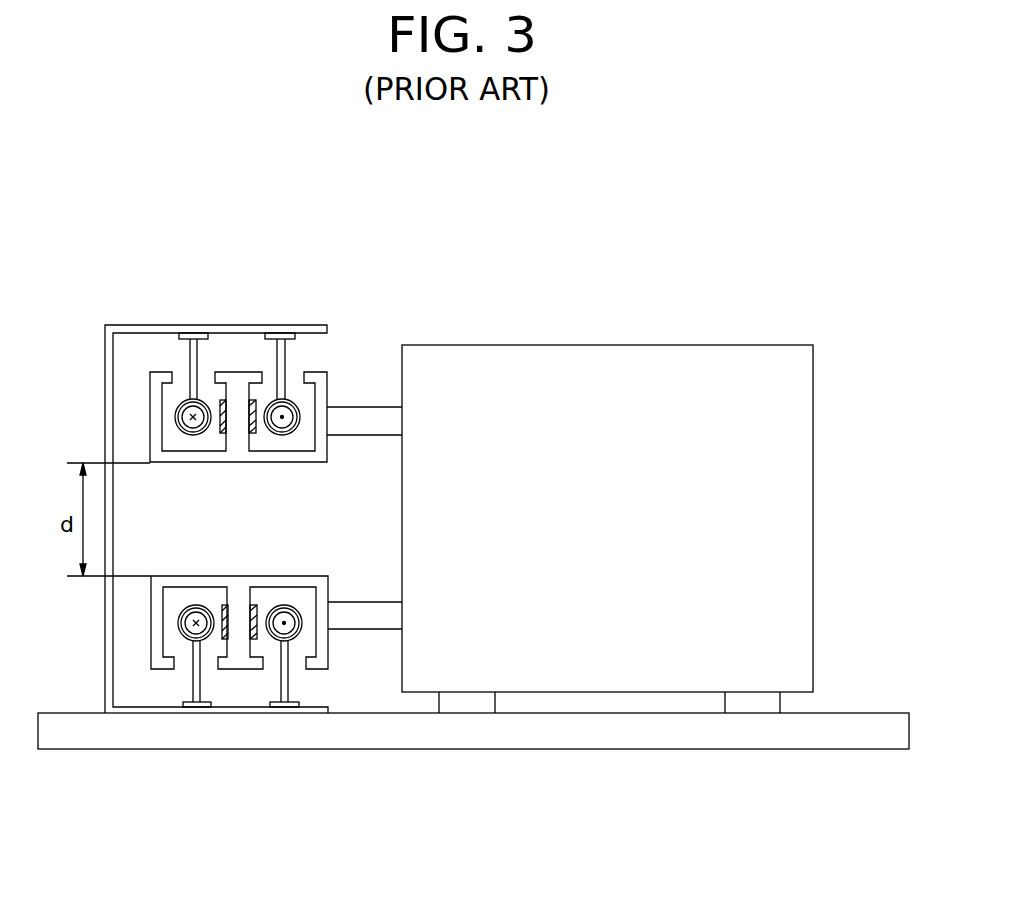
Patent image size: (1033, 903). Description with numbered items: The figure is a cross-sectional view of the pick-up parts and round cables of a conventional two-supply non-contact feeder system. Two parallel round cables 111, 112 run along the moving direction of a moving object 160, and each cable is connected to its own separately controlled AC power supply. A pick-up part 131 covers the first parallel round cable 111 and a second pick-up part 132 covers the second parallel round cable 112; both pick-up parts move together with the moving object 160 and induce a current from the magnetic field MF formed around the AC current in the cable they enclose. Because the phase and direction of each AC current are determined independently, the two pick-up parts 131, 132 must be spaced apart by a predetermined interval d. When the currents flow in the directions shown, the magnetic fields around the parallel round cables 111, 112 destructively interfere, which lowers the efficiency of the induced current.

The parallel round cable 111 is at (266, 403).
The parallel round cable 112 is at (280, 630).
The pick-up part 131 is at (327, 373).
The pick-up part 132 is at (151, 643).
The moving object 160 is at (605, 345).
The magnetic field MF is at (176, 420).